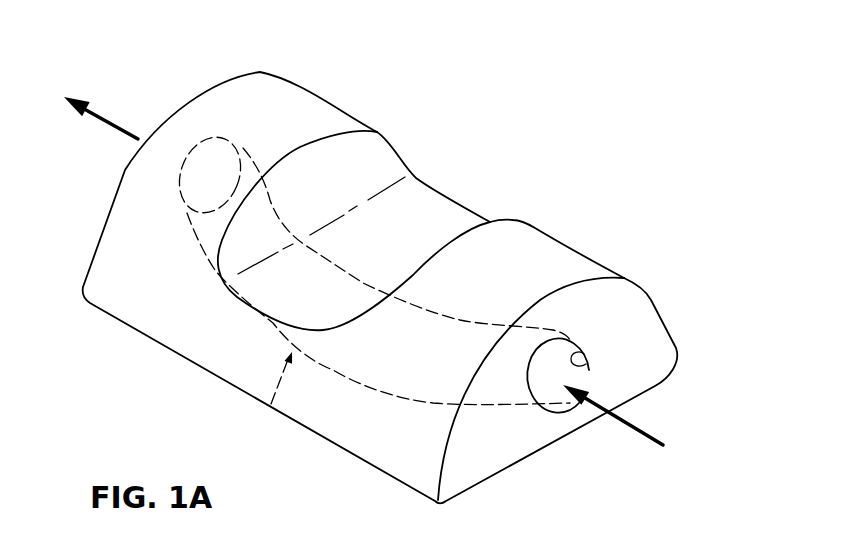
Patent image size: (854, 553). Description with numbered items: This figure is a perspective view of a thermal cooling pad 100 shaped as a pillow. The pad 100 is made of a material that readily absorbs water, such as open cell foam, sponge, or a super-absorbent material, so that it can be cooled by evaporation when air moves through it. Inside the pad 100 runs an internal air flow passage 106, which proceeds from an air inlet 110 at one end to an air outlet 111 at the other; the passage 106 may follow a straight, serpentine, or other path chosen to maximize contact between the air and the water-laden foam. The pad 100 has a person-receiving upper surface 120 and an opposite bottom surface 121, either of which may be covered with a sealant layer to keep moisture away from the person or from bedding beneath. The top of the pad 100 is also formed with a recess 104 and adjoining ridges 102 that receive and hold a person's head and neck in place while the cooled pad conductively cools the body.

The thermal cooling pad 100 is at (143, 382).
The ridges 102 is at (253, 88).
The recess 104 is at (434, 128).
The internal air flow passage 106 is at (398, 363).
The air inlet 110 is at (586, 364).
The air outlet 111 is at (207, 142).
The person-receiving upper surface 120 is at (404, 248).
The bottom surface 121 is at (270, 408).